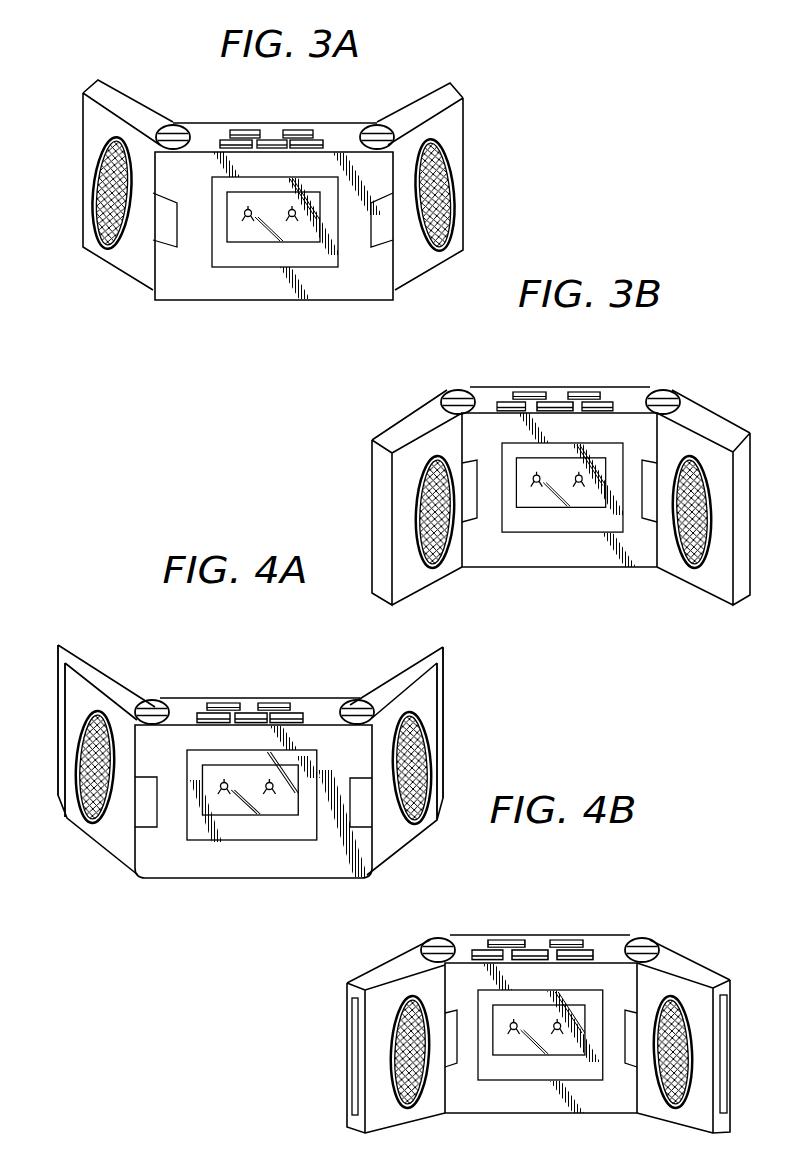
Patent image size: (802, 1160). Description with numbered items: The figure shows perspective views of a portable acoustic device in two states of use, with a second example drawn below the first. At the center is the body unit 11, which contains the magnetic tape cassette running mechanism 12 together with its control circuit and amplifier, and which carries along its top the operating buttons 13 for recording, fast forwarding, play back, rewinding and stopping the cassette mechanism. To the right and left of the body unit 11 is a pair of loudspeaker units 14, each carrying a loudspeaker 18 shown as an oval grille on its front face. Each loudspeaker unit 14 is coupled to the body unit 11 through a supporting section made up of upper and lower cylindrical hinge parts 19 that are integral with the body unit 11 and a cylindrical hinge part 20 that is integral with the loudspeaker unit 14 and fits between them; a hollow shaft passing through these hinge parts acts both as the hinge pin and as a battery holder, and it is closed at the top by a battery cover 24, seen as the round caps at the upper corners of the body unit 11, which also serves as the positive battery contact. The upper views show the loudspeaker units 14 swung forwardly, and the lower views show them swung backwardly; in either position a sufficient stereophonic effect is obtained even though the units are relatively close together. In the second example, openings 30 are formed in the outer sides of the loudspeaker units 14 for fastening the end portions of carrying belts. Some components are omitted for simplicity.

In FIG. 3A, the body unit 11 is at (305, 292).
In FIG. 3B, the body unit 11 is at (568, 560).
In FIG. 4A, the body unit 11 is at (295, 698).
In FIG. 4B, the body unit 11 is at (570, 952).
In FIG. 3A, the magnetic tape cassette running mechanism 12 is at (263, 233).
In FIG. 3B, the magnetic tape cassette running mechanism 12 is at (548, 500).
In FIG. 4A, the magnetic tape cassette running mechanism 12 is at (253, 796).
In FIG. 4B, the magnetic tape cassette running mechanism 12 is at (540, 1035).
In FIG. 3A, the operating buttons 13 is at (268, 130).
In FIG. 3B, the operating buttons 13 is at (528, 390).
In FIG. 4A, the operating buttons 13 is at (218, 707).
In FIG. 4B, the operating buttons 13 is at (532, 935).
In FIG. 3A, the loudspeaker unit 14 is at (123, 265).
In FIG. 3B, the loudspeaker unit 14 is at (422, 578).
In FIG. 4A, the loudspeaker unit 14 is at (92, 672).
In FIG. 4B, the loudspeaker unit 14 is at (393, 957).
In FIG. 3A, the loudspeaker 18 is at (100, 192).
In FIG. 3B, the loudspeaker 18 is at (417, 508).
In FIG. 4A, the loudspeaker 18 is at (253, 767).
In FIG. 4B, the loudspeaker 18 is at (541, 1052).
In FIG. 3A, the cylindrical hinge part 19 is at (165, 285).
In FIG. 3A, the cylindrical hinge part 20 is at (166, 228).
In FIG. 3A, the battery cover 24 is at (171, 125).
In FIG. 3B, the battery cover 24 is at (460, 388).
In FIG. 4A, the battery cover 24 is at (153, 701).
In FIG. 4B, the battery cover 24 is at (437, 938).
In FIG. 4A, the opening 30 is at (60, 740).
In FIG. 4B, the opening 30 is at (352, 1057).